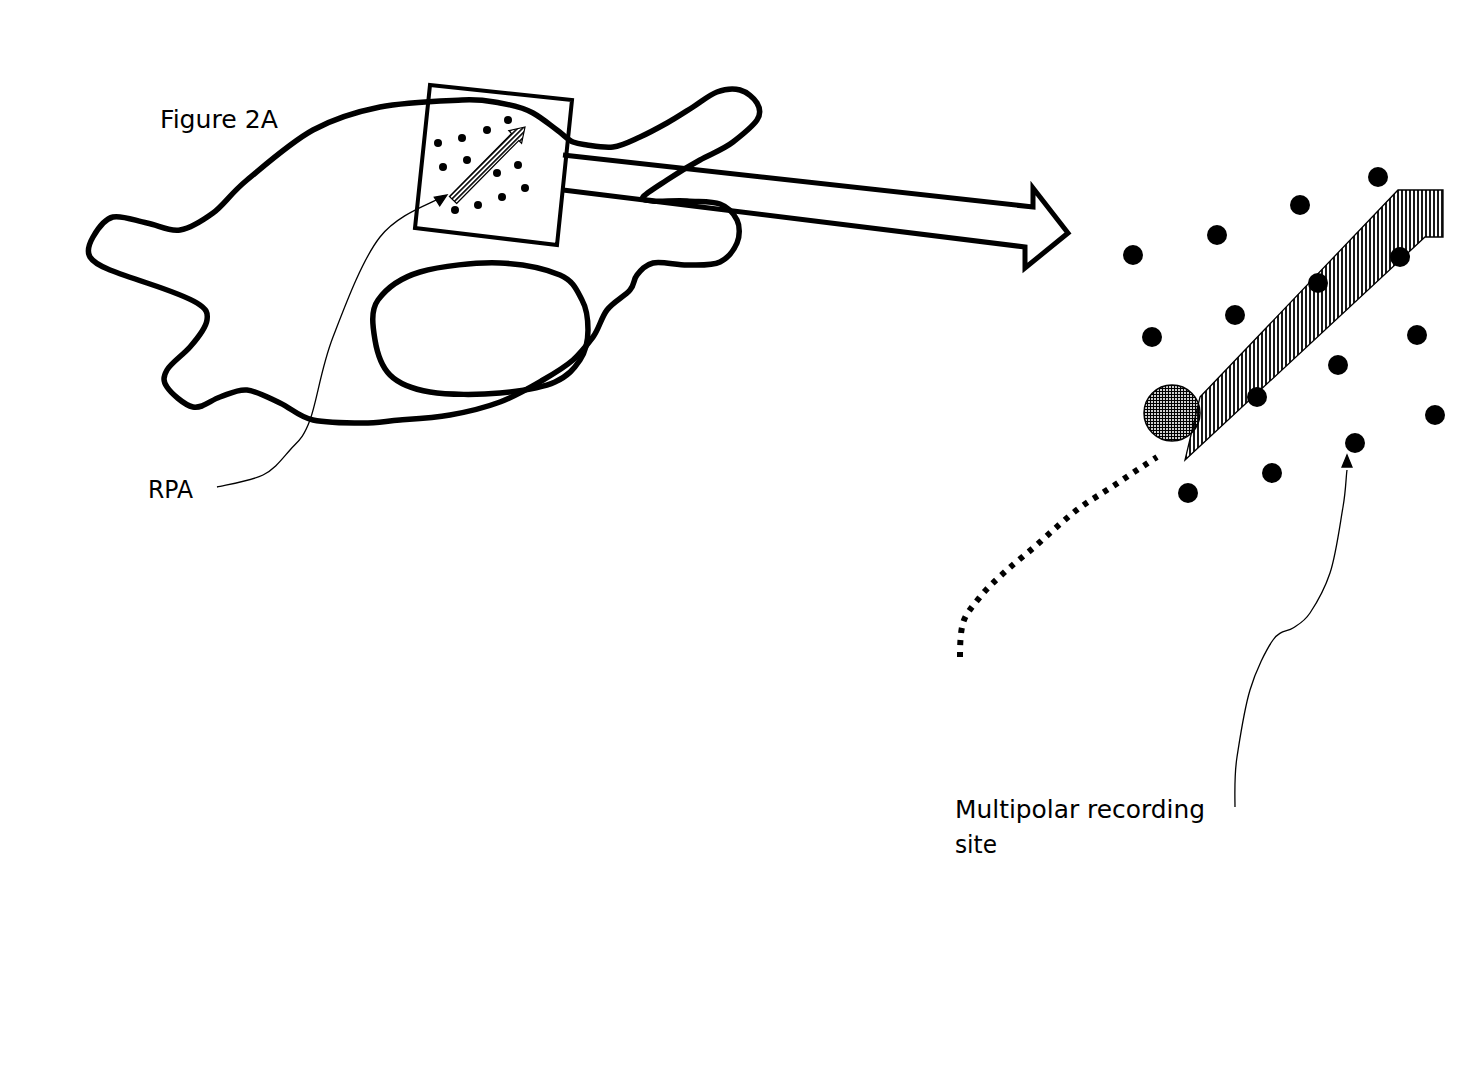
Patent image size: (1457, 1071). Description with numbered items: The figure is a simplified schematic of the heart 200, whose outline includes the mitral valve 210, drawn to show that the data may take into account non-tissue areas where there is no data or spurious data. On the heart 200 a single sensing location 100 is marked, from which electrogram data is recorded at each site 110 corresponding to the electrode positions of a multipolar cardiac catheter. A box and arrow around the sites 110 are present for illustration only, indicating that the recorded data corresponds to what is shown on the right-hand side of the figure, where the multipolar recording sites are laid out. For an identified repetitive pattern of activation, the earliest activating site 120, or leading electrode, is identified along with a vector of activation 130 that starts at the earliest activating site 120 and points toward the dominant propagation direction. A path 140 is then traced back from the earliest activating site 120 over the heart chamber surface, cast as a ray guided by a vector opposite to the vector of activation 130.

The sensing location 100 is at (562, 232).
The site 110 is at (518, 165).
The earliest activating site 120 is at (1130, 415).
The vector of activation 130 is at (1377, 240).
The path 140 is at (1045, 525).
The heart 200 is at (360, 427).
The mitral valve 210 is at (477, 390).